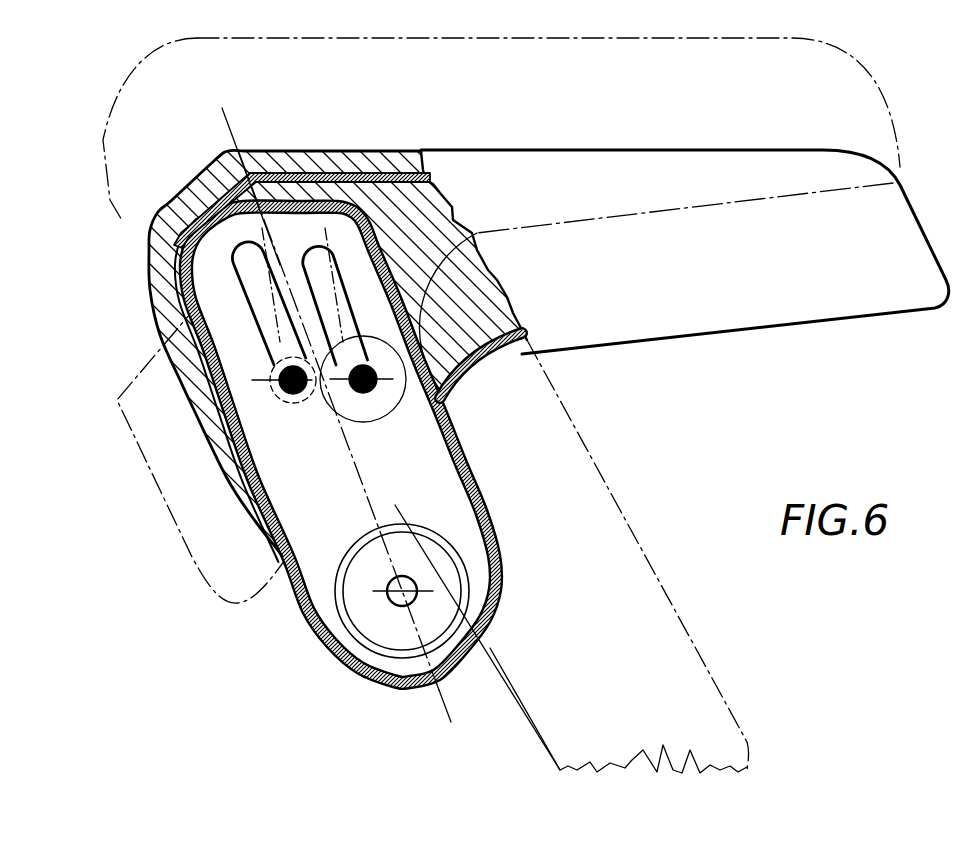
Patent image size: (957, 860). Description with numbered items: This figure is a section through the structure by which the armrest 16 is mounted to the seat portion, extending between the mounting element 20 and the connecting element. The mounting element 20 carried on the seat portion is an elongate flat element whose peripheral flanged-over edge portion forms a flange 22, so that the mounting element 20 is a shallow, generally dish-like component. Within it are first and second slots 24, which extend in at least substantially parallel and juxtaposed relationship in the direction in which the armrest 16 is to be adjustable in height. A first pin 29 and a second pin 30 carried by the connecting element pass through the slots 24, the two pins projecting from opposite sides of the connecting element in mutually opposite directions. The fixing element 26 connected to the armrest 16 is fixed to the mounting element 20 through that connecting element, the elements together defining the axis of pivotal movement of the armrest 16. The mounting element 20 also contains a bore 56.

The armrest 16 is at (742, 290).
The mounting element 20 is at (371, 664).
The flange 22 is at (292, 555).
The slots 24 is at (312, 250).
The fixing element 26 is at (279, 176).
The first pin 29 is at (282, 386).
The second pin 30 is at (370, 392).
The bore 56 is at (417, 597).